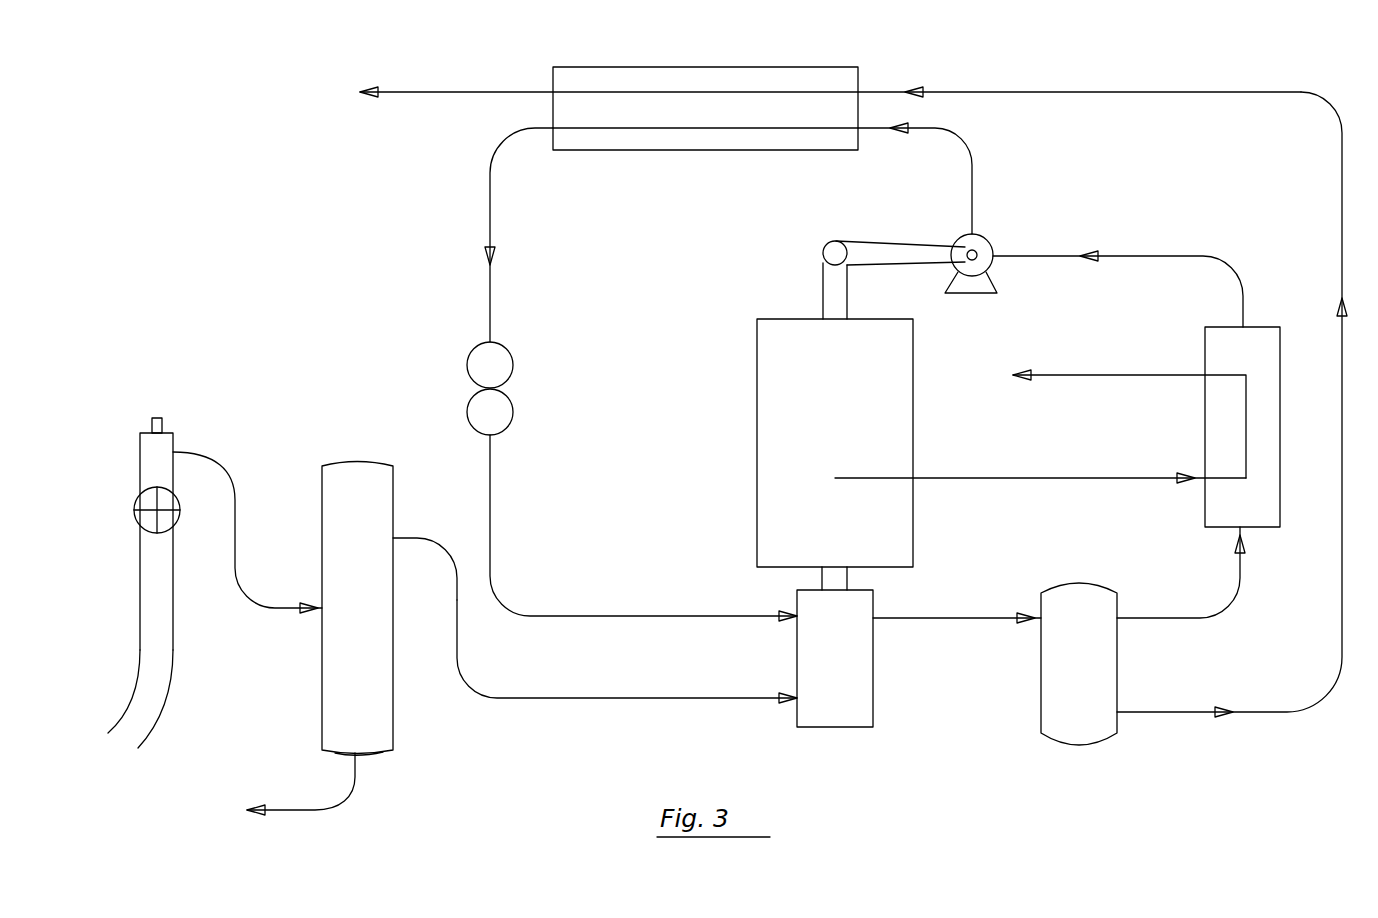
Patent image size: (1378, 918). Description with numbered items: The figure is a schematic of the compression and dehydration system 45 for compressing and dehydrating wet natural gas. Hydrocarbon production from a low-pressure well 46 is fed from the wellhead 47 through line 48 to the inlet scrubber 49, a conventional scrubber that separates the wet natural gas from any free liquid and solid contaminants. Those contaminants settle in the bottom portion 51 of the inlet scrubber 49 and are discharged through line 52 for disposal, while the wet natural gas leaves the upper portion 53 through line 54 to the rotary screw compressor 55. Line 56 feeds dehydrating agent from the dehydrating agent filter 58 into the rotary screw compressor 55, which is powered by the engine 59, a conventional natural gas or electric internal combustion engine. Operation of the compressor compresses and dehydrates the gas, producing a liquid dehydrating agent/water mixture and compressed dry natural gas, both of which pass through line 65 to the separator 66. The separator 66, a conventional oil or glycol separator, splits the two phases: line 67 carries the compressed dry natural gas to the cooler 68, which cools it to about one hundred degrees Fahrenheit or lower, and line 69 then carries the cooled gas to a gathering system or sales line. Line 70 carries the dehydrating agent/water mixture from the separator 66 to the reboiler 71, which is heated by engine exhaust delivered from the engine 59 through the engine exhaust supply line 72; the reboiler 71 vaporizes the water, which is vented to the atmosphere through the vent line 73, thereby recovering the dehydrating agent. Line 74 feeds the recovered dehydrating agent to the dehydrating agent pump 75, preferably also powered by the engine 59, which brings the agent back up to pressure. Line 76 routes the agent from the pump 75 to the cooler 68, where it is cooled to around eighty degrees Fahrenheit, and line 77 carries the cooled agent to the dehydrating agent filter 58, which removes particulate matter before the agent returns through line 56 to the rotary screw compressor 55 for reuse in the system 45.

The compression and dehydration system 45 is at (230, 173).
The low-pressure well 46 is at (172, 667).
The wellhead 47 is at (163, 435).
The line 48 is at (238, 525).
The inlet scrubber 49 is at (320, 705).
The bottom portion 51 is at (380, 748).
The line 52 is at (350, 790).
The upper portion 53 is at (393, 528).
The line 54 is at (610, 698).
The rotary screw compressor 55 is at (852, 720).
The line 56 is at (638, 615).
The dehydrating agent filter 58 is at (497, 357).
The engine 59 is at (757, 428).
The line 65 is at (953, 619).
The separator 66 is at (1095, 742).
The line 67 is at (1322, 704).
The cooler 68 is at (690, 67).
The line 69 is at (457, 91).
The line 70 is at (1232, 600).
The reboiler 71 is at (1280, 485).
The engine exhaust supply line 72 is at (1020, 478).
The vent line 73 is at (1098, 375).
The line 74 is at (1218, 258).
The dehydrating agent pump 75 is at (985, 238).
The line 76 is at (963, 152).
The line 77 is at (490, 198).